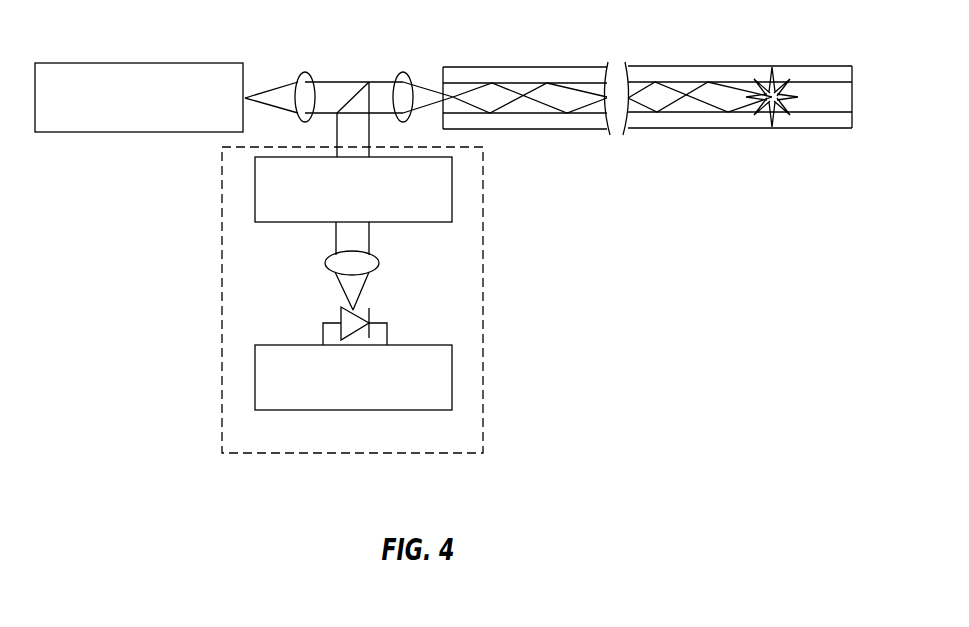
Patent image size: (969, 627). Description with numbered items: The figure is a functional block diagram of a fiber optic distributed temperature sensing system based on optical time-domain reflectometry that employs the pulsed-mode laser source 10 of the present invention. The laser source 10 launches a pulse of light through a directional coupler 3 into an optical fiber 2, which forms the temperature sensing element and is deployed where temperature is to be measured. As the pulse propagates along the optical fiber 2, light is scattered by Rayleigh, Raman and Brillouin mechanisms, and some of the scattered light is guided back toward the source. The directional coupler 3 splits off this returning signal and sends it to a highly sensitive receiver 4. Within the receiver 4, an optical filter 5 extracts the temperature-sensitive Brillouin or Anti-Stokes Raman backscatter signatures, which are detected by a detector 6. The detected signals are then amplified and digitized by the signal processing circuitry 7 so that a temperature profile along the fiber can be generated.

The pulsed-mode laser source 10 is at (100, 63).
The directional coupler 3 is at (348, 82).
The optical fiber 2 is at (762, 66).
The receiver 4 is at (485, 259).
The optical filter 5 is at (293, 222).
The detector 6 is at (355, 318).
The signal processing circuitry 7 is at (293, 410).